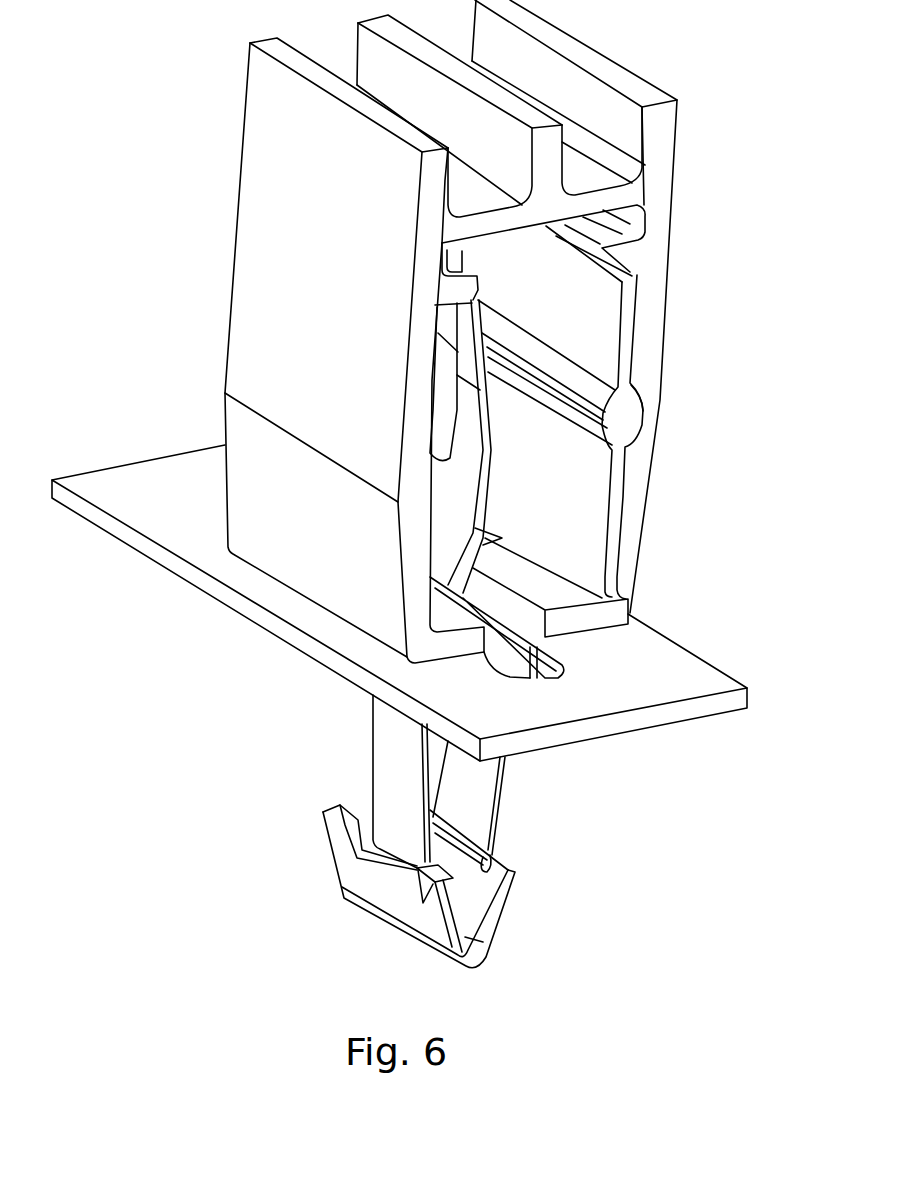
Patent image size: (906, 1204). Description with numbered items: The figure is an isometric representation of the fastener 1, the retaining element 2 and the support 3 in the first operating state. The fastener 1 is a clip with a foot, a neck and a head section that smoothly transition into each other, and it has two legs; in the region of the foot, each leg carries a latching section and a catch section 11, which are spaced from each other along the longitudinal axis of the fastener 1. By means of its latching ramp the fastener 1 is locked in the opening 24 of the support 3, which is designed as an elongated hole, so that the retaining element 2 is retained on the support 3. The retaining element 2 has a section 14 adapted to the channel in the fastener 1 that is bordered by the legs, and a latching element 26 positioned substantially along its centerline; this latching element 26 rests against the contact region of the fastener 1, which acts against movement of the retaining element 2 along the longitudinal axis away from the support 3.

The fastener 1 is at (520, 768).
The retaining element 2 is at (648, 315).
The support 3 is at (683, 725).
The catch section 11 is at (322, 800).
The section 14 is at (622, 502).
The opening 24 is at (563, 663).
The latching element 26 is at (628, 415).